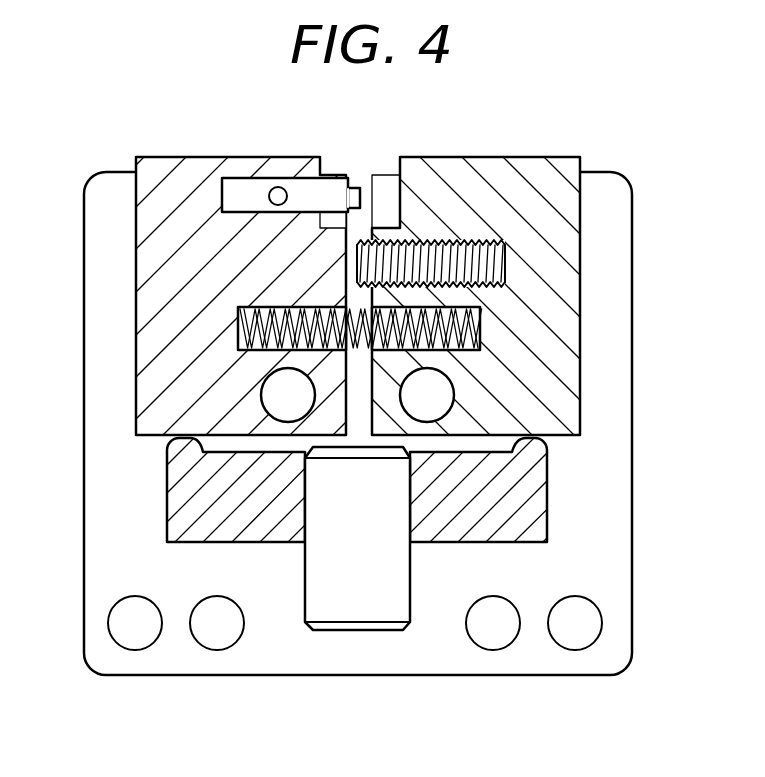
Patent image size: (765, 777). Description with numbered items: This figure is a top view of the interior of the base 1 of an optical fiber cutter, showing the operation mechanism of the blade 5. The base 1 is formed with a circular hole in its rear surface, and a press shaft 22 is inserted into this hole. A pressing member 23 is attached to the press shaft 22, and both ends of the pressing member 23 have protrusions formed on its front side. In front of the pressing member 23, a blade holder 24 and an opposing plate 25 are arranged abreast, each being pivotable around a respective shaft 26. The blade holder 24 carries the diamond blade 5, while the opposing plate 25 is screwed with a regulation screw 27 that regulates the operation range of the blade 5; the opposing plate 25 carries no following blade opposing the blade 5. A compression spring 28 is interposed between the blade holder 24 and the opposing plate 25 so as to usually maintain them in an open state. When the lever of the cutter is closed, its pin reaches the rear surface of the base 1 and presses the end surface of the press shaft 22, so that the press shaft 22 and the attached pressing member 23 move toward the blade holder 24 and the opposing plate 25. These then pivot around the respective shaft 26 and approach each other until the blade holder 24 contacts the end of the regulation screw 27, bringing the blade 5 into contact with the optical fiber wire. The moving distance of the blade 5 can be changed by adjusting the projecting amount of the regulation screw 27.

The base 1 is at (180, 660).
The blade 5 is at (333, 192).
The press shaft 22 is at (360, 605).
The pressing member 23 is at (177, 473).
The blade holder 24 is at (153, 253).
The opposing plate 25 is at (570, 243).
The shaft 26 is at (440, 398).
The regulation screw 27 is at (457, 240).
The compression spring 28 is at (480, 338).